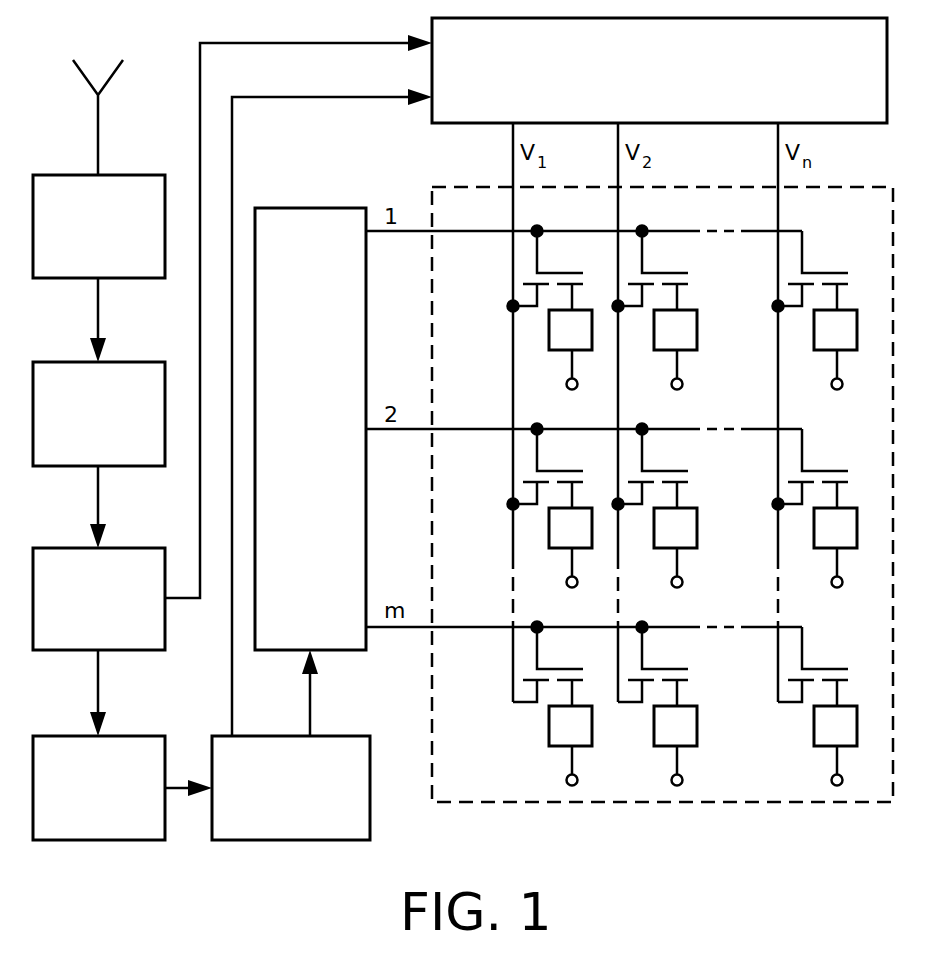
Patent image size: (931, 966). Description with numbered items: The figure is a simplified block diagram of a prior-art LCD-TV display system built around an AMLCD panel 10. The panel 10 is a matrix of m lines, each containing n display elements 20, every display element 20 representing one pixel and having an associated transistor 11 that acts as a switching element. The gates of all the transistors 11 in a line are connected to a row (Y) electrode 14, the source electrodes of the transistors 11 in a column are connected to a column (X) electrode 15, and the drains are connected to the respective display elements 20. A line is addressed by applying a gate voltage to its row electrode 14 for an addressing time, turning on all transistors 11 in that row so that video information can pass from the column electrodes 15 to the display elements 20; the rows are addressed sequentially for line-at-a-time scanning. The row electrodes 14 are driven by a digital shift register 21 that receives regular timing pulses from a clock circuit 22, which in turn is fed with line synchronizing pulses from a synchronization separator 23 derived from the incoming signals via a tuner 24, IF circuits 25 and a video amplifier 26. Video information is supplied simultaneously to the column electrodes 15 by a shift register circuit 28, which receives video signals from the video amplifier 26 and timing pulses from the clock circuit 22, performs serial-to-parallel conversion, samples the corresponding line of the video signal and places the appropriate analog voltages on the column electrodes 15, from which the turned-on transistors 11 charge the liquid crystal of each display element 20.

The AMLCD panel 10 is at (800, 802).
The transistor 11 is at (855, 648).
The row (Y) electrode 14 is at (469, 658).
The column (X) electrode 15 is at (778, 210).
The display element 20 is at (790, 765).
The digital shift register 21 is at (322, 436).
The clock circuit 22 is at (304, 799).
The synchronization separator 23 is at (112, 799).
The tuner 24 is at (112, 238).
The IF circuits 25 is at (112, 425).
The video amplifier 26 is at (112, 611).
The shift register circuit 28 is at (674, 84).